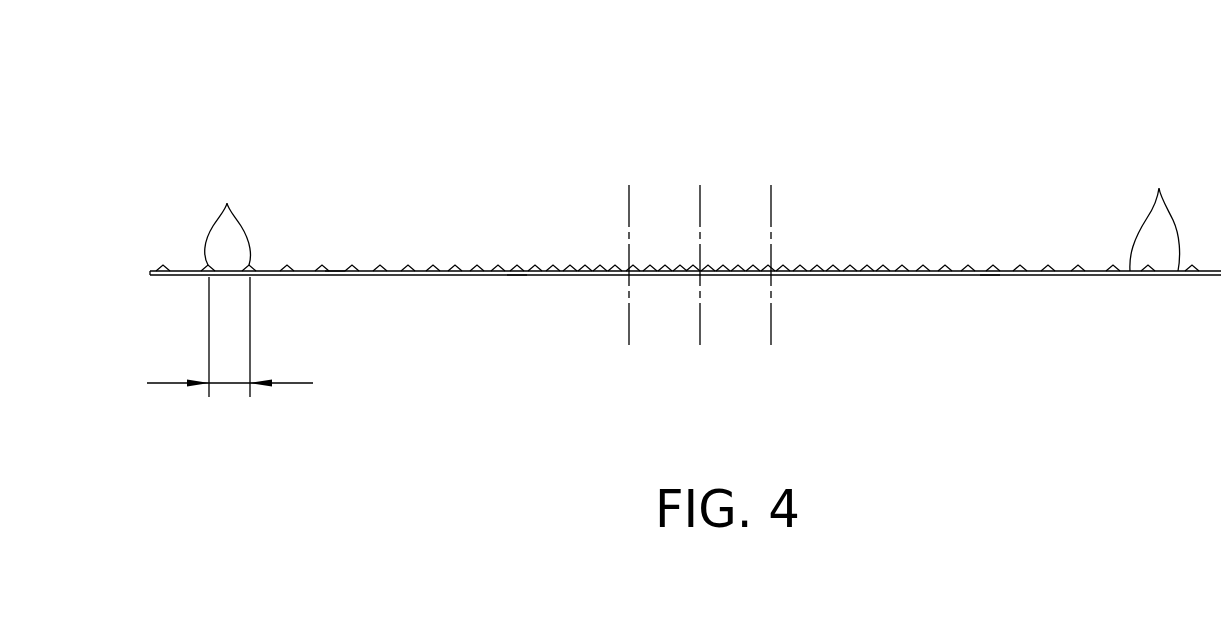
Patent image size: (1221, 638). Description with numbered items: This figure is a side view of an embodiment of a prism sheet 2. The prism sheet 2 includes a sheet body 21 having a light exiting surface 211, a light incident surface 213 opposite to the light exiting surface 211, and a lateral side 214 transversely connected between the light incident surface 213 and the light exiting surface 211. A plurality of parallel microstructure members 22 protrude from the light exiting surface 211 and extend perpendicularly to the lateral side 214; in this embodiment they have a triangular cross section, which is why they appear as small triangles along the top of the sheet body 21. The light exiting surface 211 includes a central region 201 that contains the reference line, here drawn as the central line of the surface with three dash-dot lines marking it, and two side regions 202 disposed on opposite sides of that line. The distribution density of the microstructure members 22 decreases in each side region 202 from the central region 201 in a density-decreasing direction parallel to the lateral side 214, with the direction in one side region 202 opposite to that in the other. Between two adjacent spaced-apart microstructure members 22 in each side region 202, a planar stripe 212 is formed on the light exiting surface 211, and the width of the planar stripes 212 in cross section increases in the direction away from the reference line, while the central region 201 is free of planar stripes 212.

The prism sheet 2 is at (684, 257).
The sheet body 21 is at (407, 276).
The central region 201 is at (667, 191).
The side regions 202 is at (457, 228).
The light exiting surface 211 is at (335, 271).
The planar stripes 212 is at (1155, 211).
The light incident surface 213 is at (990, 276).
The lateral side 214 is at (517, 276).
The microstructure members 22 is at (230, 306).